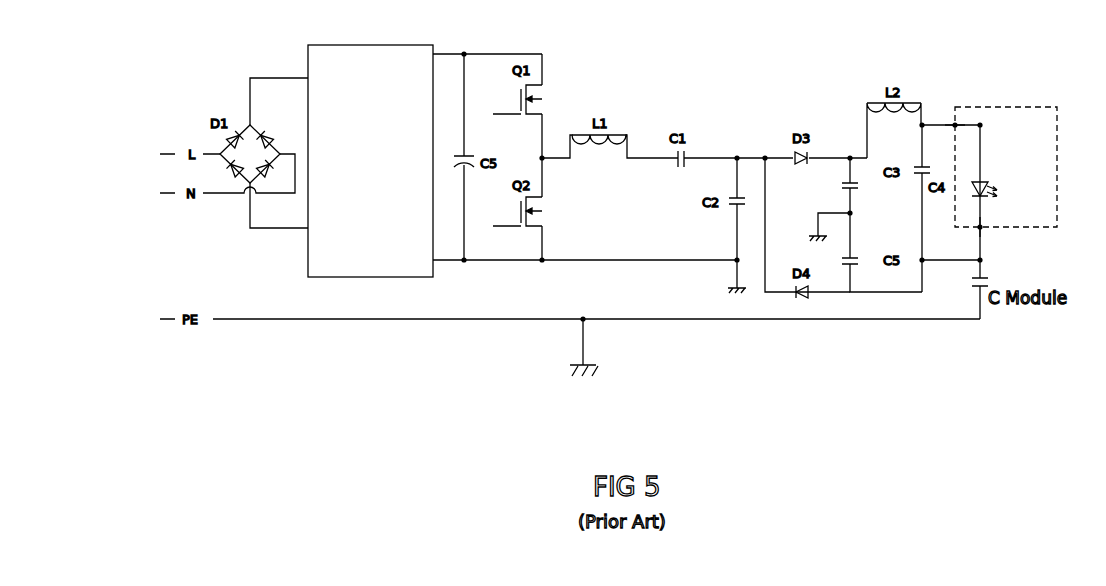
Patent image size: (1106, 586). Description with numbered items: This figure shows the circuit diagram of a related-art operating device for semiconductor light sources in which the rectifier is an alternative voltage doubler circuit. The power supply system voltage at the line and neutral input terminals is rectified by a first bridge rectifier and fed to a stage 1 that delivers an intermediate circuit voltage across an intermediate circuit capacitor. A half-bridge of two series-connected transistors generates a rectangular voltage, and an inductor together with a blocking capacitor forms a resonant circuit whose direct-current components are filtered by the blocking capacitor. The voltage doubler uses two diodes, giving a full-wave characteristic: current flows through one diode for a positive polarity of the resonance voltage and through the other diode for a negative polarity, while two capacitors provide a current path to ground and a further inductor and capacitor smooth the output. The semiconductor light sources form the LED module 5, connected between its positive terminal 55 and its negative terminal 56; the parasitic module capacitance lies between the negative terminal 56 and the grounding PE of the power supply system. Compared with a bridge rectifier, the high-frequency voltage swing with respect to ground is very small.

The power factor correction / control stage 1 is at (375, 173).
The LED module 5 is at (1053, 113).
The output terminal 55 is at (955, 125).
The negative terminal 56 is at (982, 229).